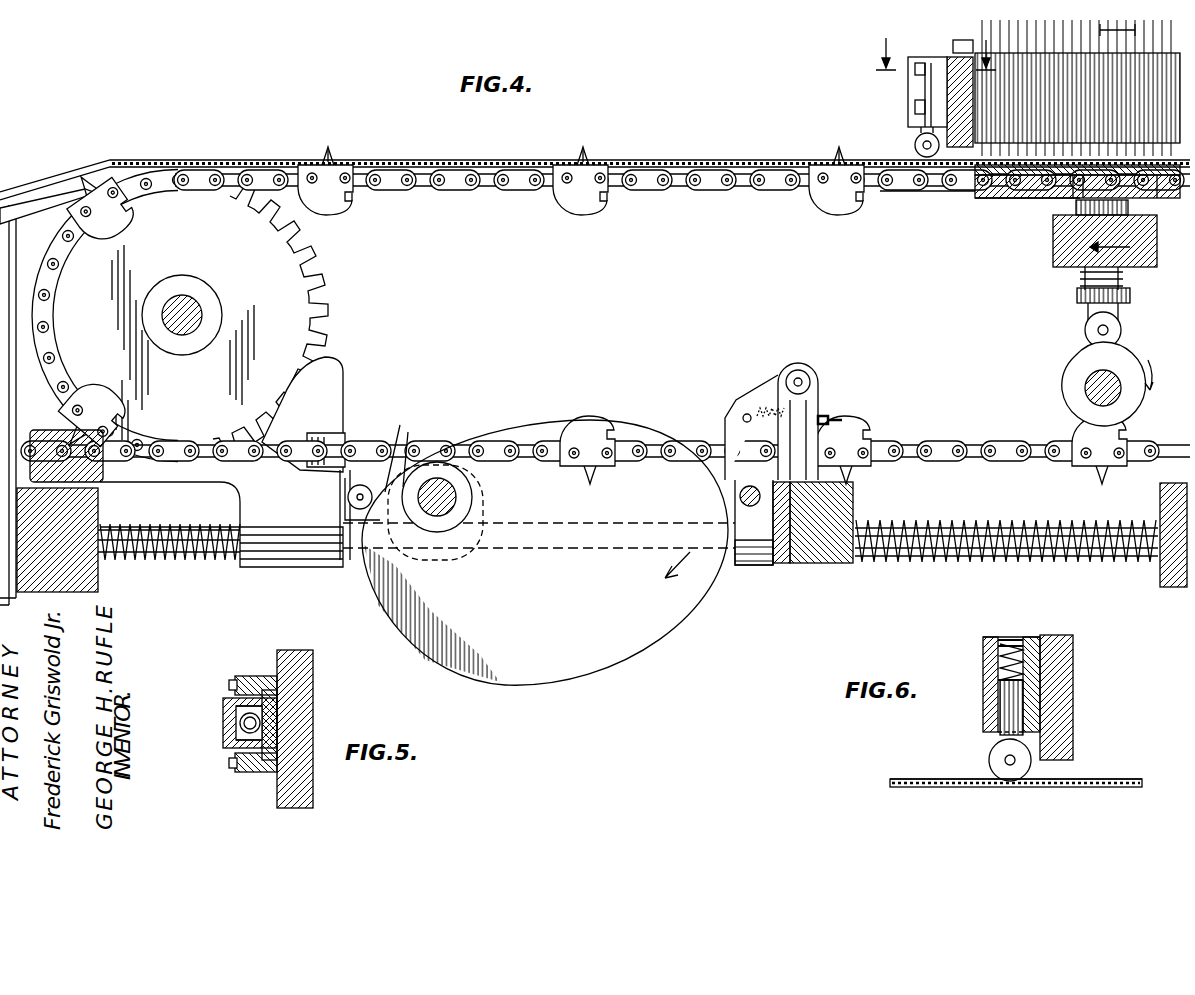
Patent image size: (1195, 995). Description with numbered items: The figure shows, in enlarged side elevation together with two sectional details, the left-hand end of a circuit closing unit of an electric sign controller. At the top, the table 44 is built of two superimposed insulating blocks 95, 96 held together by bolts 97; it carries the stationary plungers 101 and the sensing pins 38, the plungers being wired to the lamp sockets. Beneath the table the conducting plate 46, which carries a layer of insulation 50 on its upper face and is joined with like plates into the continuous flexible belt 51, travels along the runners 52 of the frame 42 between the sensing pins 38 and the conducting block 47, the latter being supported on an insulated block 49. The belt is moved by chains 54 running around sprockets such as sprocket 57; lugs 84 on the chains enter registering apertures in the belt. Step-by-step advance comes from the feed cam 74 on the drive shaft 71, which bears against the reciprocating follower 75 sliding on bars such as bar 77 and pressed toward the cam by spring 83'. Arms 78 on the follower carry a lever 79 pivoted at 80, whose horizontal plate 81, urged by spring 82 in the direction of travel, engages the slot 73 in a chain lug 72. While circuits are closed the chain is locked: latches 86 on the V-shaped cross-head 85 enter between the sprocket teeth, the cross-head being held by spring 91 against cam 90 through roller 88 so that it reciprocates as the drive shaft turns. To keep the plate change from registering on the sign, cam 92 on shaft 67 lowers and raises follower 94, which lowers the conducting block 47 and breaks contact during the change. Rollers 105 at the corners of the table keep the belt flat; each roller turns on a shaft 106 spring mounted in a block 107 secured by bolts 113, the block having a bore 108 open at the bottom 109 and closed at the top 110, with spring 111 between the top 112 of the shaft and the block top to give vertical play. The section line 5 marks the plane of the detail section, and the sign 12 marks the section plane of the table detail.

In FIG. 4, the section line 5— 5 is at (936, 67).
In FIG. 4, the section line 12 is at (1105, 142).
In FIG. 4, the sensing pins 38 is at (1058, 140).
In FIG. 4, the frame 42 is at (100, 580).
In FIG. 4, the table 44 is at (944, 48).
In FIG. 5, the table 44 is at (321, 699).
In FIG. 6, the table 44 is at (1084, 651).
In FIG. 4, the conducting plate 46 is at (942, 190).
In FIG. 6, the conducting plate 46 is at (915, 788).
In FIG. 4, the conducting block 47 is at (1010, 200).
In FIG. 4, the insulated block 49 is at (1067, 145).
In FIG. 6, the layer of insulation 50 is at (900, 783).
In FIG. 4, the belt 51 is at (778, 160).
In FIG. 4, the runners 52 is at (70, 186).
In FIG. 4, the chains 54 is at (715, 192).
In FIG. 4, the sprocket 57 is at (335, 278).
In FIG. 4, the shaft 67 is at (1088, 392).
In FIG. 4, the drive shaft 71 is at (455, 497).
In FIG. 4, the lug 72 is at (120, 225).
In FIG. 4, the slot 73 is at (356, 200).
In FIG. 4, the feed cam 74 is at (592, 655).
In FIG. 4, the follower 75 is at (815, 565).
In FIG. 4, the bar 77 is at (352, 560).
In FIG. 4, the arms 78 is at (745, 402).
In FIG. 4, the lever 79 is at (822, 412).
In FIG. 4, the pivot 80 is at (800, 372).
In FIG. 4, the horizontal plate 81 is at (840, 424).
In FIG. 4, the spring 82 is at (768, 400).
In FIG. 4, the spring 83' is at (1021, 535).
In FIG. 4, the lugs 84 is at (72, 200).
In FIG. 4, the cross-head 85 is at (150, 482).
In FIG. 4, the latches 86 is at (345, 362).
In FIG. 4, the roller 88 is at (365, 478).
In FIG. 4, the cam 90 is at (398, 450).
In FIG. 4, the spring 91 is at (200, 560).
In FIG. 4, the cam 92 is at (1065, 360).
In FIG. 4, the follower 94 is at (1075, 296).
In FIG. 4, the block 95 is at (1062, 70).
In FIG. 4, the block 96 is at (1150, 178).
In FIG. 4, the bolts 97 is at (955, 42).
In FIG. 4, the plungers 101 is at (1100, 48).
In FIG. 4, the rollers 105 is at (913, 146).
In FIG. 6, the rollers 105 is at (992, 760).
In FIG. 4, the shaft 106 is at (920, 125).
In FIG. 5, the shaft 106 is at (240, 714).
In FIG. 6, the shaft 106 is at (1005, 710).
In FIG. 4, the block 107 is at (912, 60).
In FIG. 5, the block 107 is at (225, 722).
In FIG. 6, the block 107 is at (990, 640).
In FIG. 6, the bore 108 is at (1000, 665).
In FIG. 6, the bottom opening 109 is at (1000, 732).
In FIG. 6, the top 110 is at (1003, 640).
In FIG. 5, the spring 111 is at (232, 735).
In FIG. 6, the spring 111 is at (1000, 645).
In FIG. 6, the top of shaft 112 is at (1000, 688).
In FIG. 4, the bolts 113 is at (915, 72).
In FIG. 5, the bolts 113 is at (245, 678).